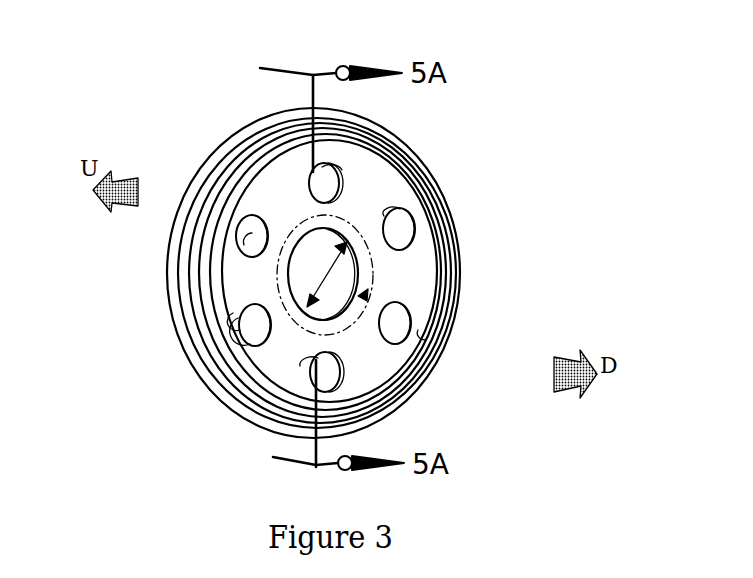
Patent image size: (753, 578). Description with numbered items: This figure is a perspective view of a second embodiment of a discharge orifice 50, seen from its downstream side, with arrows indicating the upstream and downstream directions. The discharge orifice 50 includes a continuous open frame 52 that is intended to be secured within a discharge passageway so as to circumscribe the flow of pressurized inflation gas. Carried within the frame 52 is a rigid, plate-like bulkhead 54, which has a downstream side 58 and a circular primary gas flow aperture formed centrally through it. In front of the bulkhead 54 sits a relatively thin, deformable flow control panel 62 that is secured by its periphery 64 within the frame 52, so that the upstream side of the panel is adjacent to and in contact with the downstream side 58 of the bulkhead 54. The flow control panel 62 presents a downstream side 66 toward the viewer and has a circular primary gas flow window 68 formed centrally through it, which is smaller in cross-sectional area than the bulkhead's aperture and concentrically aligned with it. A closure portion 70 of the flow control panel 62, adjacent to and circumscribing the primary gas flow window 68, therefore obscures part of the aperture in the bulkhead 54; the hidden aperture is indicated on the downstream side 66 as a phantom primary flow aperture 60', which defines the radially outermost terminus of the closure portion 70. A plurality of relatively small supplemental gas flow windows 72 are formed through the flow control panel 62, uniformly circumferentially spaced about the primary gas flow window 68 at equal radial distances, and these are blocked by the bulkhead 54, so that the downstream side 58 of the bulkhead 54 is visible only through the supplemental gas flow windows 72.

The discharge orifice 50 is at (497, 167).
The continuous open frame 52 is at (230, 150).
The bulkhead 54 is at (395, 323).
The downstream side of bulkhead 58 is at (255, 317).
The phantom primary flow aperture 60' is at (240, 147).
The flow control panel 62 is at (392, 356).
The periphery of flow control panel 64 is at (233, 313).
The downstream side of flow control panel 66 is at (385, 197).
The primary gas flow window 68 is at (322, 272).
The closure portion 70 is at (372, 345).
The supplemental gas flow windows 72 is at (338, 168).